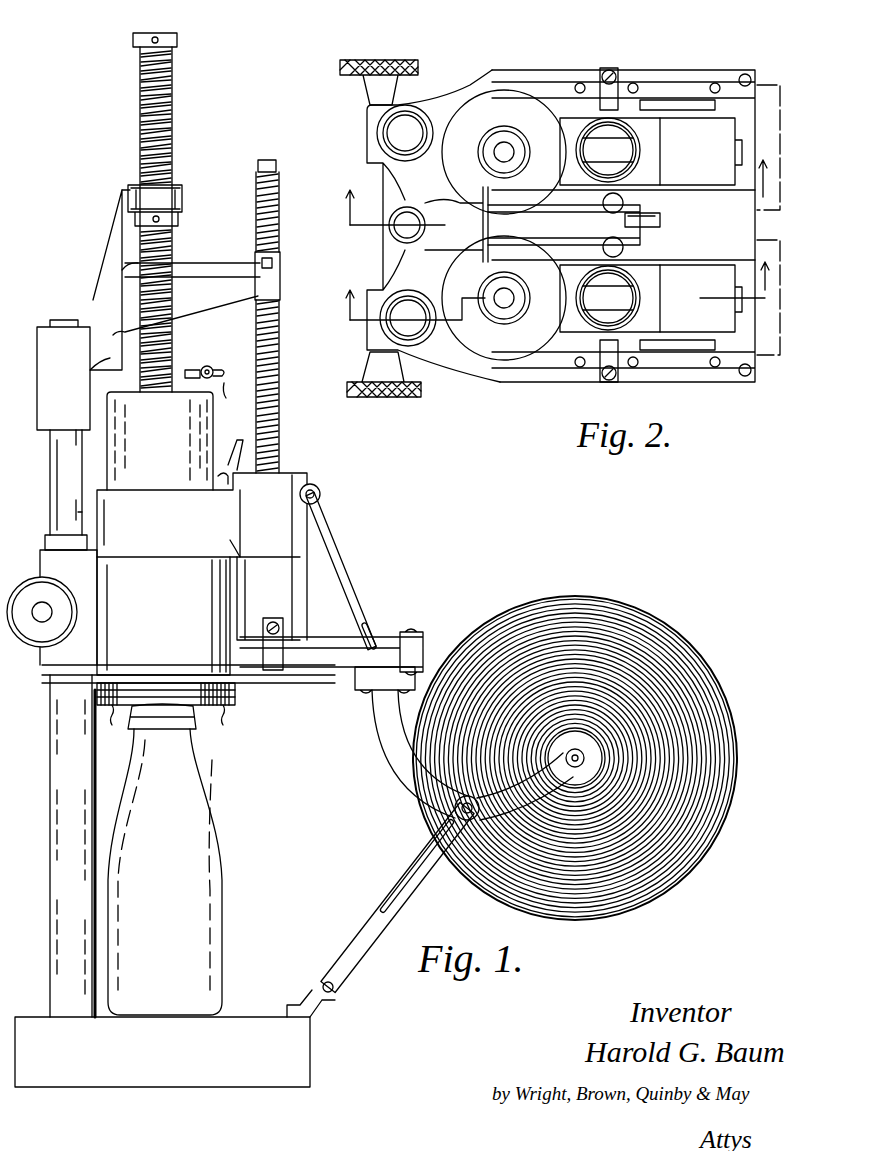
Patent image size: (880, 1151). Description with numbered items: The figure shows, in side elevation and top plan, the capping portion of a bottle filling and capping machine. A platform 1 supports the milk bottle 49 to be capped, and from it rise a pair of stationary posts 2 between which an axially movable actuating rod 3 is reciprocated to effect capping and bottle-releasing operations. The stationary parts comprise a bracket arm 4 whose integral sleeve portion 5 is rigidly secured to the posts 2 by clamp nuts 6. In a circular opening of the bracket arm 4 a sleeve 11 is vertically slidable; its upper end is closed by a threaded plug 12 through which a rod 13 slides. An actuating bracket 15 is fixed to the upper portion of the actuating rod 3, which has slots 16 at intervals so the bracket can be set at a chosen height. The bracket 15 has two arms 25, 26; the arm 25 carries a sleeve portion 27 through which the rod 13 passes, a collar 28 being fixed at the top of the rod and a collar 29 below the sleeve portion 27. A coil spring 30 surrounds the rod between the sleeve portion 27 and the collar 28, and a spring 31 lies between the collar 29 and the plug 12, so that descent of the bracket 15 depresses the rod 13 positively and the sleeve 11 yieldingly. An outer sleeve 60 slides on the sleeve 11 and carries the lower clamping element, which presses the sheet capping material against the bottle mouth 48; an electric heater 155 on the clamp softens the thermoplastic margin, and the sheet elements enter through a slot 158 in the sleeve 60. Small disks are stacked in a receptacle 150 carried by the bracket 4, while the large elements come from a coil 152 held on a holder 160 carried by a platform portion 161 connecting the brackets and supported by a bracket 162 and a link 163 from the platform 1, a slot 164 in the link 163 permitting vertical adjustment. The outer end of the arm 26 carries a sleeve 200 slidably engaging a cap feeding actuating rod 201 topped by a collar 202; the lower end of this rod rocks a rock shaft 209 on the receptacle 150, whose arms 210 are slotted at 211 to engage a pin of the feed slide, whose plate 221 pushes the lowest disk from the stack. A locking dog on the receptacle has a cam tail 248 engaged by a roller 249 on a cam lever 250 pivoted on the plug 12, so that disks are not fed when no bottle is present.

In FIG. 1, the platform 1 is at (165, 1078).
In FIG. 1, the stationary posts 2 is at (55, 772).
In FIG. 2, the stationary posts 2 is at (410, 125).
In FIG. 1, the actuating rod 3 is at (52, 488).
In FIG. 2, the actuating rod 3 is at (408, 216).
In FIG. 1, the bracket arm 4 is at (202, 556).
In FIG. 2, the bracket arm 4 is at (462, 102).
In FIG. 1, the sleeve portion 5 is at (45, 560).
In FIG. 1, the clamp nuts 6 is at (30, 642).
In FIG. 2, the clamp nuts 6 is at (385, 60).
In FIG. 1, the sleeve 11 is at (160, 441).
In FIG. 2, the threaded plug 12 is at (535, 122).
In FIG. 1, the rod 13 is at (173, 118).
In FIG. 2, the rod 13 is at (503, 148).
In FIG. 1, the bracket 15 is at (95, 300).
In FIG. 2, the bracket 15 is at (433, 226).
In FIG. 1, the slots 16 is at (55, 436).
In FIG. 1, the arm 25 is at (124, 200).
In FIG. 1, the arm 26 is at (216, 264).
In FIG. 2, the arm 26 is at (564, 225).
In FIG. 1, the sleeve portion 27 is at (181, 186).
In FIG. 1, the collar 28 is at (179, 40).
In FIG. 1, the collar 29 is at (178, 216).
In FIG. 1, the coil spring 30 is at (175, 80).
In FIG. 1, the spring 31 is at (176, 331).
In FIG. 1, the bottle mouth 48 is at (197, 728).
In FIG. 1, the milk bottle 49 is at (190, 900).
In FIG. 1, the sleeve 60 is at (163, 616).
In FIG. 1, the receptacle 150 is at (268, 598).
In FIG. 2, the receptacle 150 is at (642, 152).
In FIG. 1, the coil 152 is at (660, 640).
In FIG. 1, the electric heater 155 is at (240, 702).
In FIG. 1, the slot 158 is at (183, 668).
In FIG. 1, the holder 160 is at (400, 772).
In FIG. 1, the platform portion 161 is at (351, 680).
In FIG. 1, the bracket 162 is at (306, 988).
In FIG. 1, the link 163 is at (360, 930).
In FIG. 1, the slot 164 is at (425, 858).
In FIG. 1, the sleeve 200 is at (280, 276).
In FIG. 1, the cap feeding actuating rod 201 is at (281, 386).
In FIG. 2, the cap feeding actuating rod 201 is at (663, 221).
In FIG. 1, the collar 202 is at (277, 160).
In FIG. 1, the rock shaft 209 is at (320, 488).
In FIG. 1, the arms 210 is at (352, 590).
In FIG. 2, the arms 210 is at (660, 105).
In FIG. 1, the slot 211 is at (381, 626).
In FIG. 1, the plate 221 is at (412, 636).
In FIG. 2, the plate 221 is at (716, 128).
In FIG. 1, the cam tail 248 is at (236, 444).
In FIG. 1, the roller 249 is at (218, 394).
In FIG. 1, the cam lever 250 is at (206, 366).